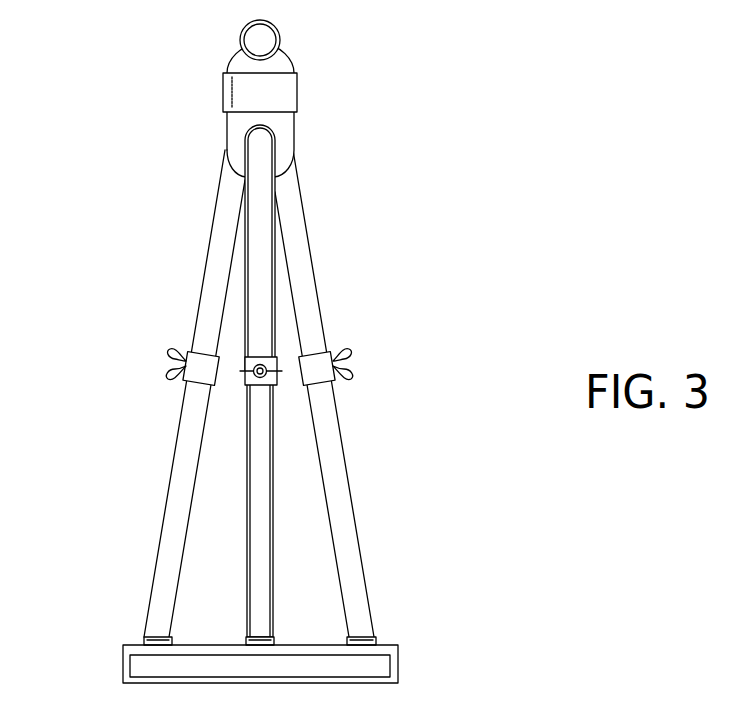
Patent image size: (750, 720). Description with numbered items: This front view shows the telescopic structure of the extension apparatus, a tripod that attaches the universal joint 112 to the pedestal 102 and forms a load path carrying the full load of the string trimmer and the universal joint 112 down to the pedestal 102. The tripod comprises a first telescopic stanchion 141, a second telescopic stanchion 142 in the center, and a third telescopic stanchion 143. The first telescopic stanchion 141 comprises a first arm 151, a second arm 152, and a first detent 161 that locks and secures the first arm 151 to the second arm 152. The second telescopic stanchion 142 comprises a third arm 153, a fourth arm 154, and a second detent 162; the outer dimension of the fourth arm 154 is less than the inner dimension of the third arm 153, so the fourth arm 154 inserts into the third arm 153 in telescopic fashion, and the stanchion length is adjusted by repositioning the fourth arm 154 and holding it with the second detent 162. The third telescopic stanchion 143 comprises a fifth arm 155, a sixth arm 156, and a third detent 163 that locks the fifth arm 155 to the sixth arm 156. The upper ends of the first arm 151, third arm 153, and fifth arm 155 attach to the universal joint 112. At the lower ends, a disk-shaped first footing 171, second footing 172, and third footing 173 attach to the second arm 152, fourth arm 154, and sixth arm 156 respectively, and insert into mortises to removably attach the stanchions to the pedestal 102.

The pedestal 102 is at (398, 660).
The universal joint 112 is at (291, 56).
The first telescopic stanchion 141 is at (145, 393).
The second telescopic stanchion 142 is at (263, 381).
The third telescopic stanchion 143 is at (396, 393).
The first arm 151 is at (203, 302).
The second arm 152 is at (167, 517).
The third arm 153 is at (275, 273).
The fourth arm 154 is at (270, 493).
The fifth arm 155 is at (303, 205).
The sixth arm 156 is at (332, 435).
The first detent 161 is at (170, 366).
The second detent 162 is at (277, 362).
The third detent 163 is at (353, 363).
The first footing 171 is at (148, 630).
The second footing 172 is at (250, 632).
The third footing 173 is at (351, 632).